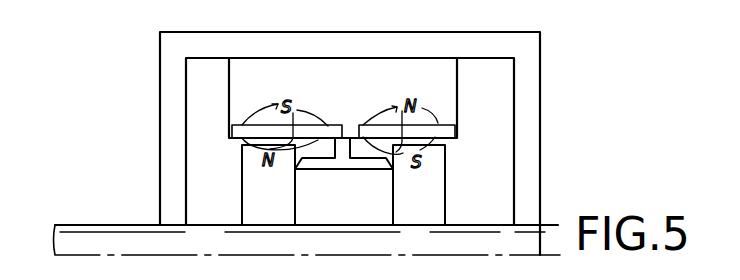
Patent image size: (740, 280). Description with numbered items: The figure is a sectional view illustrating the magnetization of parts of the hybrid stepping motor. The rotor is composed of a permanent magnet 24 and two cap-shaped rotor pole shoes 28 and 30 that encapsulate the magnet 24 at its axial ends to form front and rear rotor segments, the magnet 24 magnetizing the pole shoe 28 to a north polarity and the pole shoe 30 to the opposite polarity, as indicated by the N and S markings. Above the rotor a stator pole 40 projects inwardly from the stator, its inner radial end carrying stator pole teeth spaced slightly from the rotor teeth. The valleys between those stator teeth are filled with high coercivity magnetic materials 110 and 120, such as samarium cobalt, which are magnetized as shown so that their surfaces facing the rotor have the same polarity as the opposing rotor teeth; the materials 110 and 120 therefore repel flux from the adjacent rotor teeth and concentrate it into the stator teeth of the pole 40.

The permanent magnet 24 is at (356, 210).
The rotor pole shoe 28 is at (249, 170).
The rotor pole shoe 30 is at (439, 191).
The stator pole 40 is at (295, 68).
The magnetic material 110 is at (235, 128).
The magnetic material 120 is at (449, 124).